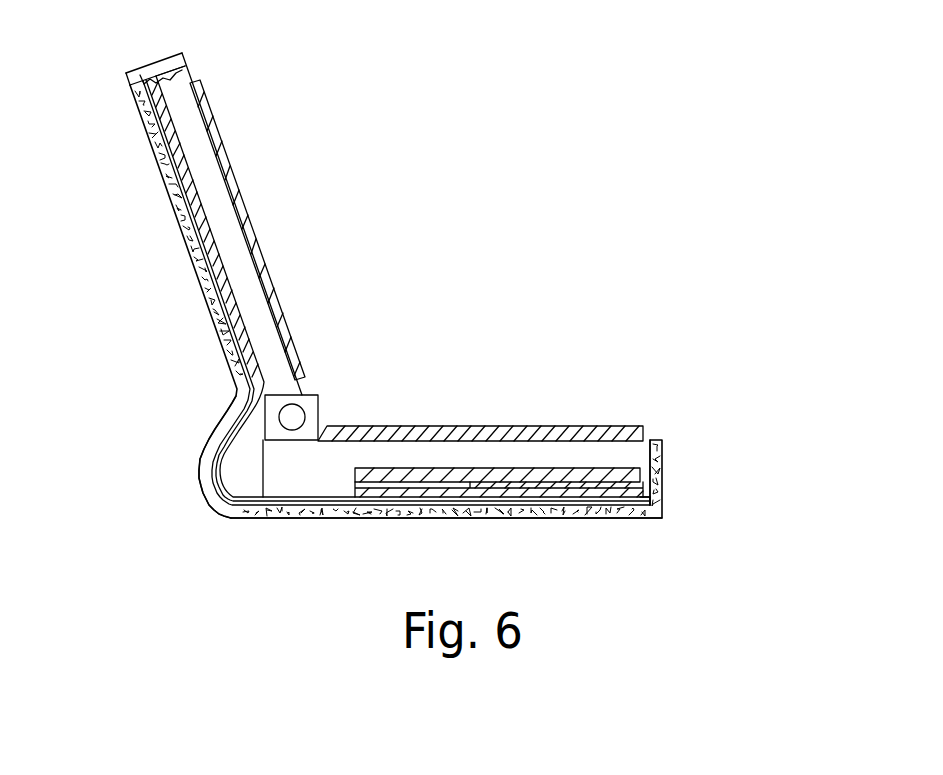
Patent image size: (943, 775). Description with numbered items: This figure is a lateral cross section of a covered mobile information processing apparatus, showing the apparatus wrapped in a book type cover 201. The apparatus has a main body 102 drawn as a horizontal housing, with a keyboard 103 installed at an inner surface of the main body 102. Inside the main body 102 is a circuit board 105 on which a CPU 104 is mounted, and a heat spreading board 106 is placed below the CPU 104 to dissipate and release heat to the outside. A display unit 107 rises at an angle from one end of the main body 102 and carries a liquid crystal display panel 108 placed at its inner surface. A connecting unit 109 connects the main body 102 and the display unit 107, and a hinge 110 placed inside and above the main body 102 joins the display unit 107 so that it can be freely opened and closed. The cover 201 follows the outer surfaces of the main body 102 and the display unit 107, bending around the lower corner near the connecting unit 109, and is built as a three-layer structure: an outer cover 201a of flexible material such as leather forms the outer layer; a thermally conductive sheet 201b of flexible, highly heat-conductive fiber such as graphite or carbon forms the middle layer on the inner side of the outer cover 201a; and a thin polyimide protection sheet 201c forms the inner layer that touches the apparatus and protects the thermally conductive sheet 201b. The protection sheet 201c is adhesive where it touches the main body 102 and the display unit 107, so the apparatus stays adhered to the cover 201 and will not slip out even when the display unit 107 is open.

The book type cover 201 is at (140, 67).
The outer cover 201a is at (260, 518).
The thermally conductive sheet 201b is at (198, 483).
The protection sheet 201c is at (228, 295).
The main body 102 is at (662, 452).
The keyboard 103 is at (616, 427).
The CPU 104 is at (522, 498).
The circuit board 105 is at (522, 470).
The heat spreading board 106 is at (662, 490).
The display unit 107 is at (207, 158).
The liquid crystal display panel 108 is at (205, 80).
The connecting unit 109 is at (313, 414).
The hinge 110 is at (293, 412).